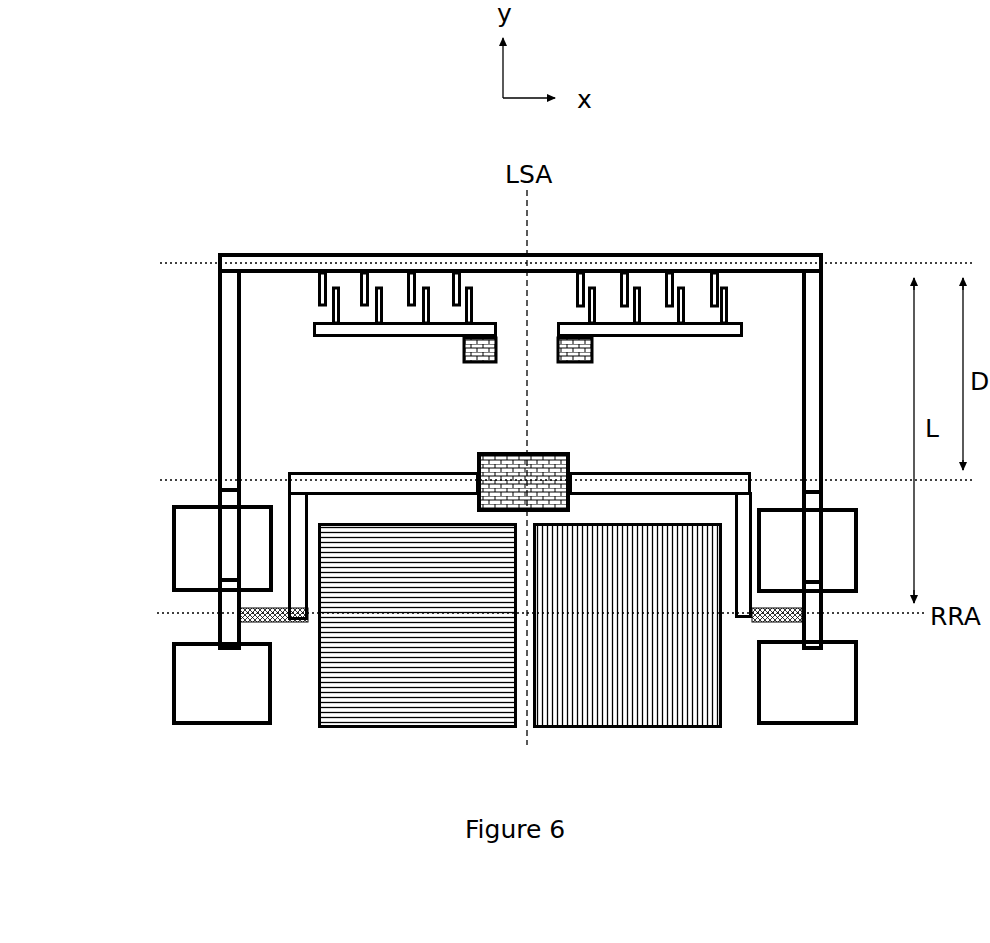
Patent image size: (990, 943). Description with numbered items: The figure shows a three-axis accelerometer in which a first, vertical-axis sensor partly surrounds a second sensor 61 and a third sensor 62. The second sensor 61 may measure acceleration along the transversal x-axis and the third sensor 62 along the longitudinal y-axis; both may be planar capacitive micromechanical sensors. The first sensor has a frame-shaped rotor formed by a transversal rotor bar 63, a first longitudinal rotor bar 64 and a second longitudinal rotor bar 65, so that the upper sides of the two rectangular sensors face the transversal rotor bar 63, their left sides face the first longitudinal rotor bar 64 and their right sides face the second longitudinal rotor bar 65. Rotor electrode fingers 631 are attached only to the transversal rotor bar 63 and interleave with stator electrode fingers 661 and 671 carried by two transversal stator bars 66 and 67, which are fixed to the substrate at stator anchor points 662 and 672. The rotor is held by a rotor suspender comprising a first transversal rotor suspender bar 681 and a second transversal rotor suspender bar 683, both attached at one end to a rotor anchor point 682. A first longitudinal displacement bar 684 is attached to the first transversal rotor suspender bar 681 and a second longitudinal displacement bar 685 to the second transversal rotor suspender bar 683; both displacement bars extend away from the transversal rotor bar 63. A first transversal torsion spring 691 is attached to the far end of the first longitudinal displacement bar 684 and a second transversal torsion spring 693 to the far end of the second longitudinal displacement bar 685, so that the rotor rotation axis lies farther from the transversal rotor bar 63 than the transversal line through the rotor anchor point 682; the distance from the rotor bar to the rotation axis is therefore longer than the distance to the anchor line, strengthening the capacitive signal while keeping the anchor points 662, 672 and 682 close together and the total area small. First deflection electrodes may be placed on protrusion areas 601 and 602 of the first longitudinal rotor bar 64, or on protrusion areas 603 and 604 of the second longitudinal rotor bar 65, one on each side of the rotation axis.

The second sensor 61 is at (650, 650).
The third sensor 62 is at (362, 652).
The transversal rotor bar 63 is at (765, 270).
The rotor electrode fingers 631 is at (320, 292).
The first longitudinal rotor bar 64 is at (222, 305).
The second longitudinal rotor bar 65 is at (812, 345).
The transversal stator bar 66 is at (640, 325).
The stator electrode fingers 661 is at (727, 302).
The stator anchor point 662 is at (575, 348).
The transversal stator bar 67 is at (390, 322).
The stator electrode fingers 671 is at (466, 300).
The stator anchor point 672 is at (478, 350).
The first transversal rotor suspender bar 681 is at (655, 477).
The rotor anchor point 682 is at (507, 485).
The second transversal rotor suspender bar 683 is at (395, 485).
The first longitudinal displacement bar 684 is at (747, 540).
The second longitudinal displacement bar 685 is at (295, 540).
The first transversal torsion spring 691 is at (785, 622).
The second transversal torsion spring 693 is at (262, 620).
The protrusion area 601 is at (207, 548).
The protrusion area 602 is at (197, 685).
The protrusion area 603 is at (810, 558).
The protrusion area 604 is at (807, 688).